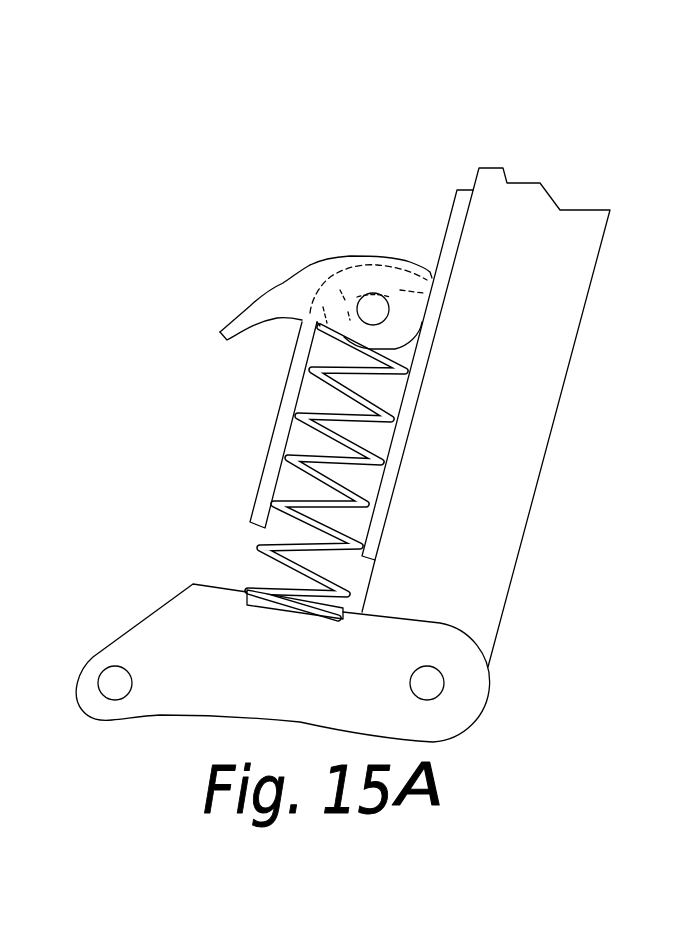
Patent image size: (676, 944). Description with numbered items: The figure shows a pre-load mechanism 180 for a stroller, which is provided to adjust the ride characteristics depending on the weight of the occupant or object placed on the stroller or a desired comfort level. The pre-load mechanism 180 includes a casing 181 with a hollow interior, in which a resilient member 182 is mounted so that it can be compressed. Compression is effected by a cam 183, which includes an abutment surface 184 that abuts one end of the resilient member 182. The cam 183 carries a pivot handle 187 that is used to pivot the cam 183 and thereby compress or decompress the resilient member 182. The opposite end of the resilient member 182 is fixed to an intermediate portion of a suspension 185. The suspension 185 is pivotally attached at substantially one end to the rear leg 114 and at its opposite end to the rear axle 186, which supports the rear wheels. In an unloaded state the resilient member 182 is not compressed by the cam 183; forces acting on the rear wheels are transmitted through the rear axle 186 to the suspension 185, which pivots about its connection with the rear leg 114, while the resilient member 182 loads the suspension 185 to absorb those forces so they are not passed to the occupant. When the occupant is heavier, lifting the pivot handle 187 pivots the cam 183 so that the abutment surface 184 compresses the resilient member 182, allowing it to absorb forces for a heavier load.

The pre-load mechanism 180 is at (344, 397).
The rear leg 114 is at (545, 406).
The casing 181 is at (282, 397).
The resilient member 182 is at (284, 460).
The cam 183 is at (346, 256).
The abutment surface 184 is at (413, 343).
The suspension 185 is at (465, 723).
The rear axle 186 is at (112, 692).
The pivot handle 187 is at (253, 300).